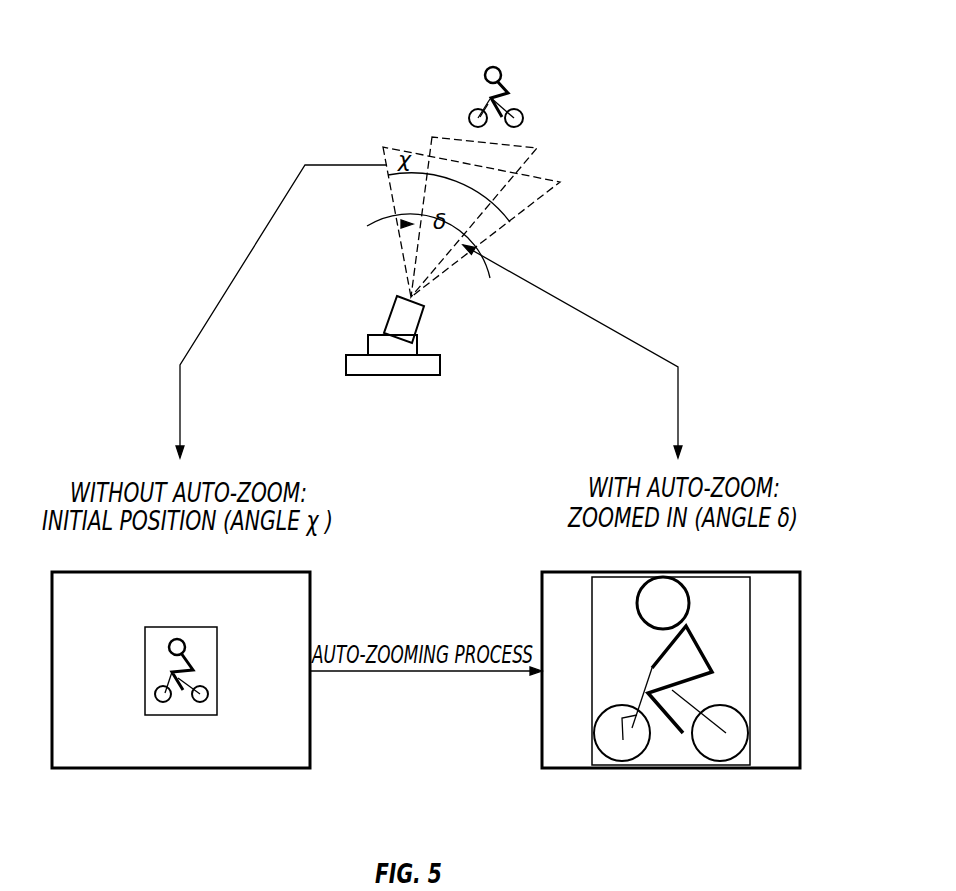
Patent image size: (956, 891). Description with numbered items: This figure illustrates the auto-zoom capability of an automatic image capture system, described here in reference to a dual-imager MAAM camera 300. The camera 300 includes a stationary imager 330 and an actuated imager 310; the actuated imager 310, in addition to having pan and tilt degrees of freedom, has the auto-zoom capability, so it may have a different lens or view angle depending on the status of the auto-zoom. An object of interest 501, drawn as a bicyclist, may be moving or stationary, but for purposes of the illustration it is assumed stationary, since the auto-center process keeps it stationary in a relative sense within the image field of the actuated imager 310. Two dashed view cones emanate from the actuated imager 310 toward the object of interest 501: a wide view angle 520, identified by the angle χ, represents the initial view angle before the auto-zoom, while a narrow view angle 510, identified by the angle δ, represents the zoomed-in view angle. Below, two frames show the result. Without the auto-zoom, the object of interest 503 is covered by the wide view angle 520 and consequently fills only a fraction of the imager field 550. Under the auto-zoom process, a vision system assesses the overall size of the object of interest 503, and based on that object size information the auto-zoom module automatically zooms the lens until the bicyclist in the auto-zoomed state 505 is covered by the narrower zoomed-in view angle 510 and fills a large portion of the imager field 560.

The object of interest 501 is at (527, 90).
The wide view angle 520 is at (398, 150).
The narrow view angle 510 is at (389, 178).
The dual-imager MAAM camera 300 is at (389, 337).
The actuated imager 310 is at (425, 308).
The stationary imager 330 is at (418, 340).
The imager field 550 is at (275, 572).
The object of interest without auto-zoom 503 is at (145, 647).
The imager field 560 is at (770, 572).
The bicyclist in auto-zoomed state 505 is at (592, 633).